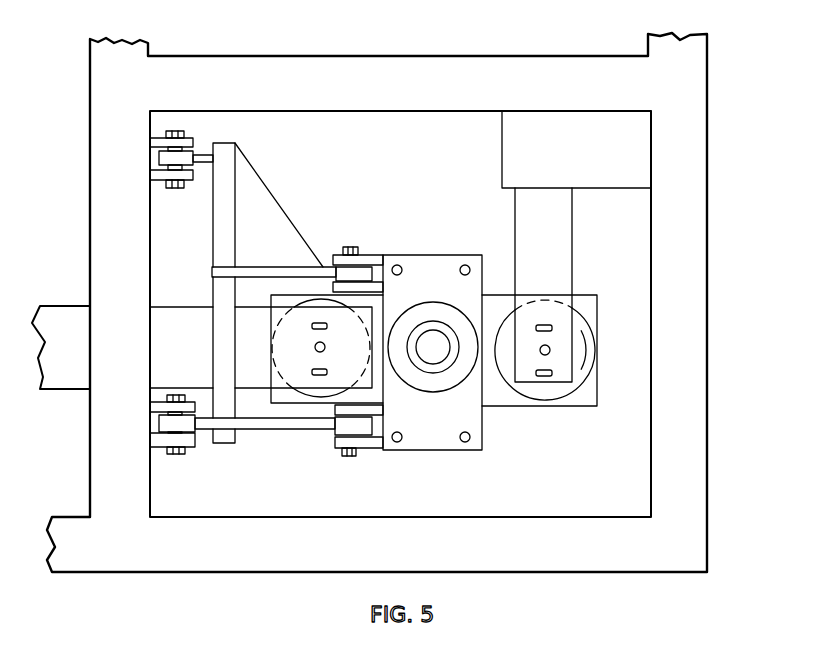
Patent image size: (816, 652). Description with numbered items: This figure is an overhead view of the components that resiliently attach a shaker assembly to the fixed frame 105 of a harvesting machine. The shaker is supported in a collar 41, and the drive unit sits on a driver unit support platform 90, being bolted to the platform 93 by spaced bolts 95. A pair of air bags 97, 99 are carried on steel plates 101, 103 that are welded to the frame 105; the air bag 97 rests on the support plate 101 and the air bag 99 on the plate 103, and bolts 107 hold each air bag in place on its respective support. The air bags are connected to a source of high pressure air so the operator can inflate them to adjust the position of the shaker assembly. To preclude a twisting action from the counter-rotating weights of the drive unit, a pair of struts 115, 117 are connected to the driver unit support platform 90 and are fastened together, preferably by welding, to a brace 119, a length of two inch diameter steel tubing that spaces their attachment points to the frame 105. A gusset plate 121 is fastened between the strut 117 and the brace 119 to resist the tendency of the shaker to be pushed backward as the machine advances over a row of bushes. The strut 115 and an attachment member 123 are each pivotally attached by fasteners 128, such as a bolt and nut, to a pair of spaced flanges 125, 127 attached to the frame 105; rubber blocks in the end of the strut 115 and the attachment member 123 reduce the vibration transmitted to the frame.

The collar 41 is at (431, 330).
The driver unit support platform 90 is at (436, 379).
The platform 93 is at (425, 378).
The spaced bolts 95 is at (396, 442).
The air bag 97 is at (312, 302).
The air bag 99 is at (585, 335).
The steel plate 101 is at (184, 358).
The steel plate 103 is at (550, 248).
The frame 105 is at (698, 287).
The bolts 107 is at (315, 347).
The strut 115 is at (266, 431).
The strut 117 is at (293, 268).
The brace 119 is at (218, 245).
The gusset plate 121 is at (254, 195).
The attachment member 123 is at (202, 155).
The flange 125 is at (155, 405).
The flange 127 is at (157, 178).
The fasteners 128 is at (177, 188).